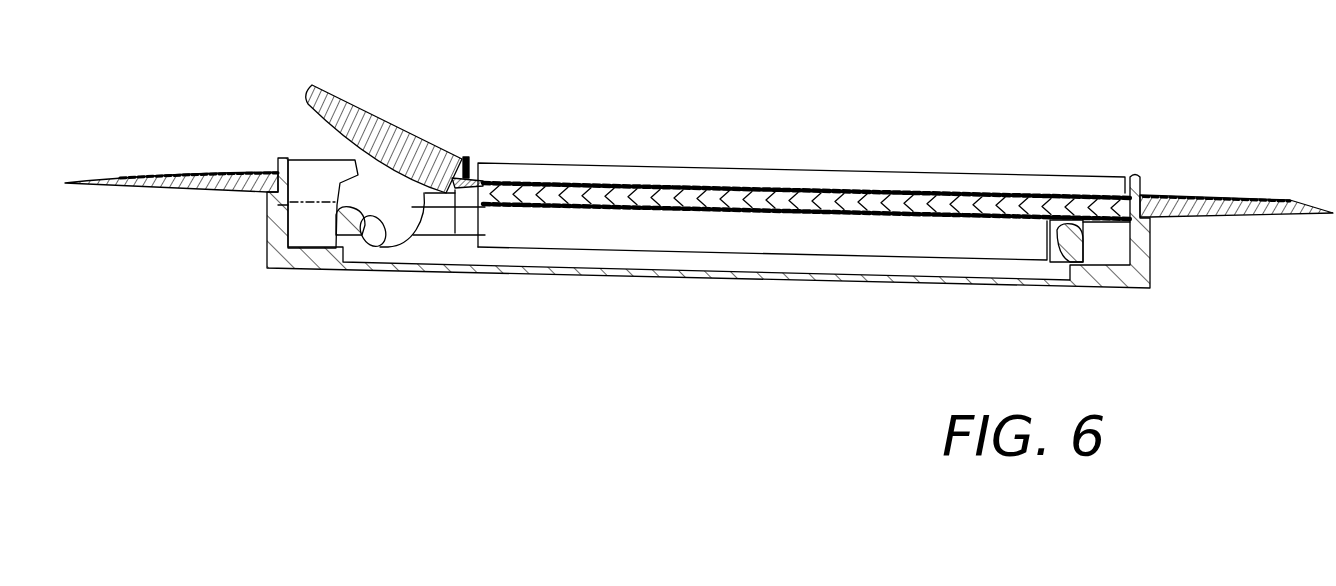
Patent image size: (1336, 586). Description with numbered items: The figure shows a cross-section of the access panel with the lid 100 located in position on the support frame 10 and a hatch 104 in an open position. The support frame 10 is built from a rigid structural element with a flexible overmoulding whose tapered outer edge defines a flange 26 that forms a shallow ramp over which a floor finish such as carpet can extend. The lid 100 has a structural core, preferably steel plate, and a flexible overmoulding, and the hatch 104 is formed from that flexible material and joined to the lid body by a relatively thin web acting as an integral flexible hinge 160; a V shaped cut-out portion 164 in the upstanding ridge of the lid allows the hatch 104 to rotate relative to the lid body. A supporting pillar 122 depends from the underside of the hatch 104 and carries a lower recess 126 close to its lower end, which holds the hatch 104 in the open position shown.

The support frame 10 is at (677, 278).
The flange 26 is at (1293, 200).
The lid 100 is at (848, 173).
The access hatch 104 is at (383, 140).
The supporting pillar 122 is at (372, 182).
The lower recess 126 is at (387, 243).
The flexible hinge 160 is at (456, 180).
The V shaped cut-out portion 164 is at (472, 160).